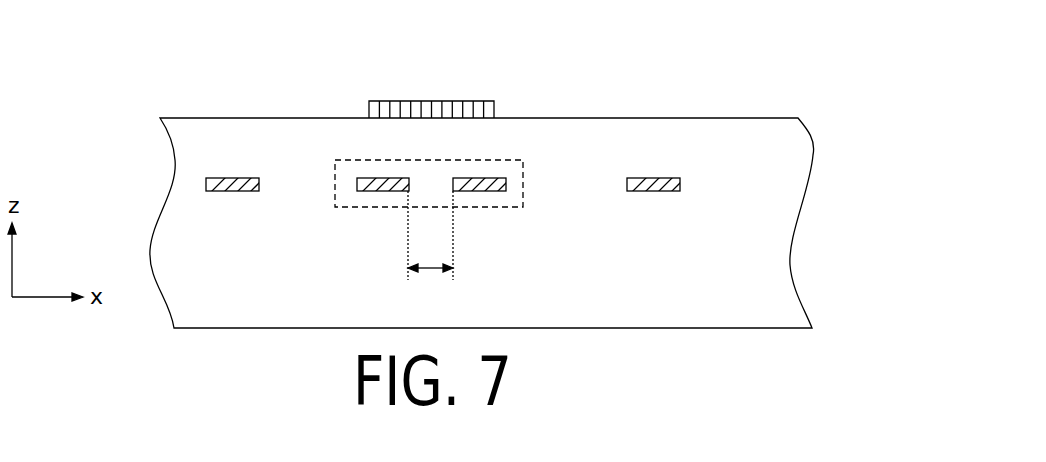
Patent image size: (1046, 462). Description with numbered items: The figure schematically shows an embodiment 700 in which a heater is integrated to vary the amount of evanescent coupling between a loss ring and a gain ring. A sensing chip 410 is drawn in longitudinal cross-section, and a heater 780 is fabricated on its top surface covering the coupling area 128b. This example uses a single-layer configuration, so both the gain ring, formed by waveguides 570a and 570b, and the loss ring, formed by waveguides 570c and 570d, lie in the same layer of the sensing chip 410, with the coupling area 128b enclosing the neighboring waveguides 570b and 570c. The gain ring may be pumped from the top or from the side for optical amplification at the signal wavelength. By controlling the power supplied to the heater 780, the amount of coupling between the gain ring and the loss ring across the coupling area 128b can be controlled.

The embodiment 700 is at (132, 51).
The sensing chip 410 is at (668, 118).
The heater 780 is at (494, 105).
The coupling area 128b is at (508, 160).
The waveguide 570a is at (232, 191).
The waveguide 570b is at (366, 191).
The waveguide 570c is at (497, 191).
The waveguide 570d is at (653, 191).